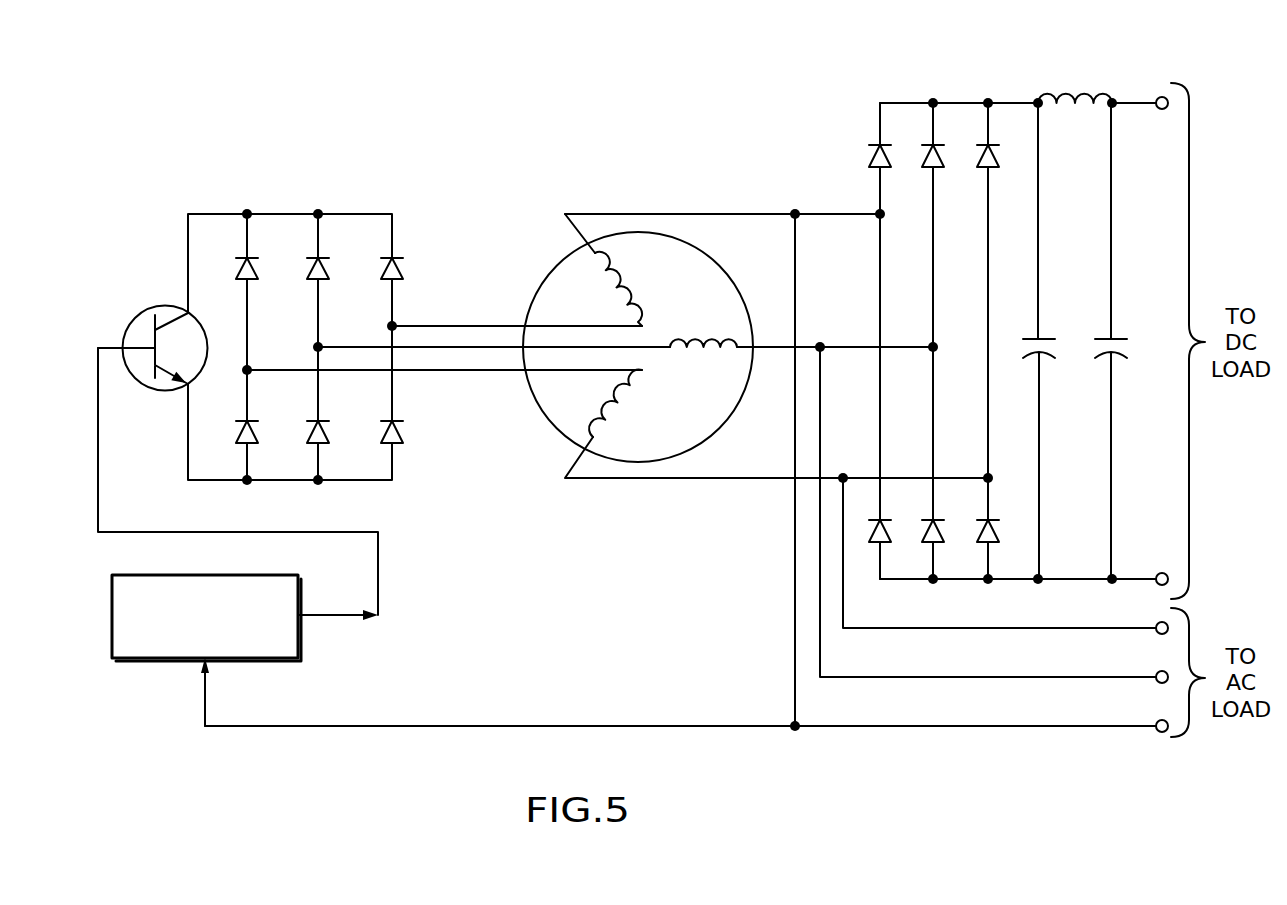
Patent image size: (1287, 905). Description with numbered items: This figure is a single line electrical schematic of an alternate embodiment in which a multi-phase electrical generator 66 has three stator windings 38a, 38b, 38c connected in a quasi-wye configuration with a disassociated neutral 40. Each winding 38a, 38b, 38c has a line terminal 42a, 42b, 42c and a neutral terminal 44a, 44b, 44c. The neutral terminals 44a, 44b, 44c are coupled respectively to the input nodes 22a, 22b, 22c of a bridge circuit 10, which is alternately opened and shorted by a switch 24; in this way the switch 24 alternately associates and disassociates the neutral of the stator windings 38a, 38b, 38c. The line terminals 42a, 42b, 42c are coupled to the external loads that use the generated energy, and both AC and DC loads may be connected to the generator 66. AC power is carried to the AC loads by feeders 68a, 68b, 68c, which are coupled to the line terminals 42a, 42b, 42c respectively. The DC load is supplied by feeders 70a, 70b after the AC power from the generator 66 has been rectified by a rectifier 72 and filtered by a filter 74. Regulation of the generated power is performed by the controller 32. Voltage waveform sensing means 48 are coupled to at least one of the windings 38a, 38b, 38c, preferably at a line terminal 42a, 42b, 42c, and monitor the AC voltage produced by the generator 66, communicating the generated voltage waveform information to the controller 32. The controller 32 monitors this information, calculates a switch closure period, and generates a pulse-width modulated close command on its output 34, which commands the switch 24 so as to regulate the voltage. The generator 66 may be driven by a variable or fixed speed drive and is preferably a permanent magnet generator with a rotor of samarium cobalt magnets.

The bridge circuit 10 is at (289, 172).
The input node 22a is at (395, 325).
The input node 22b is at (321, 346).
The input node 22c is at (250, 369).
The switch 24 is at (160, 280).
The controller 32 is at (302, 645).
The output 34 is at (313, 613).
The stator winding 38a is at (623, 270).
The stator winding 38b is at (711, 338).
The stator winding 38c is at (617, 404).
The disassociated neutral 40 is at (657, 374).
The line terminal 42a is at (577, 237).
The line terminal 42b is at (840, 346).
The line terminal 42c is at (573, 462).
The neutral terminal 44a is at (595, 325).
The neutral terminal 44b is at (489, 345).
The neutral terminal 44c is at (513, 371).
The voltage waveform sensing means 48 is at (535, 726).
The multi-phase electrical generator 66 is at (727, 234).
The feeder 68a is at (890, 731).
The feeder 68b is at (987, 678).
The feeder 68c is at (1082, 630).
The feeder 70a is at (1128, 100).
The feeder 70b is at (1135, 577).
The rectifier 72 is at (937, 68).
The filter 74 is at (1073, 68).